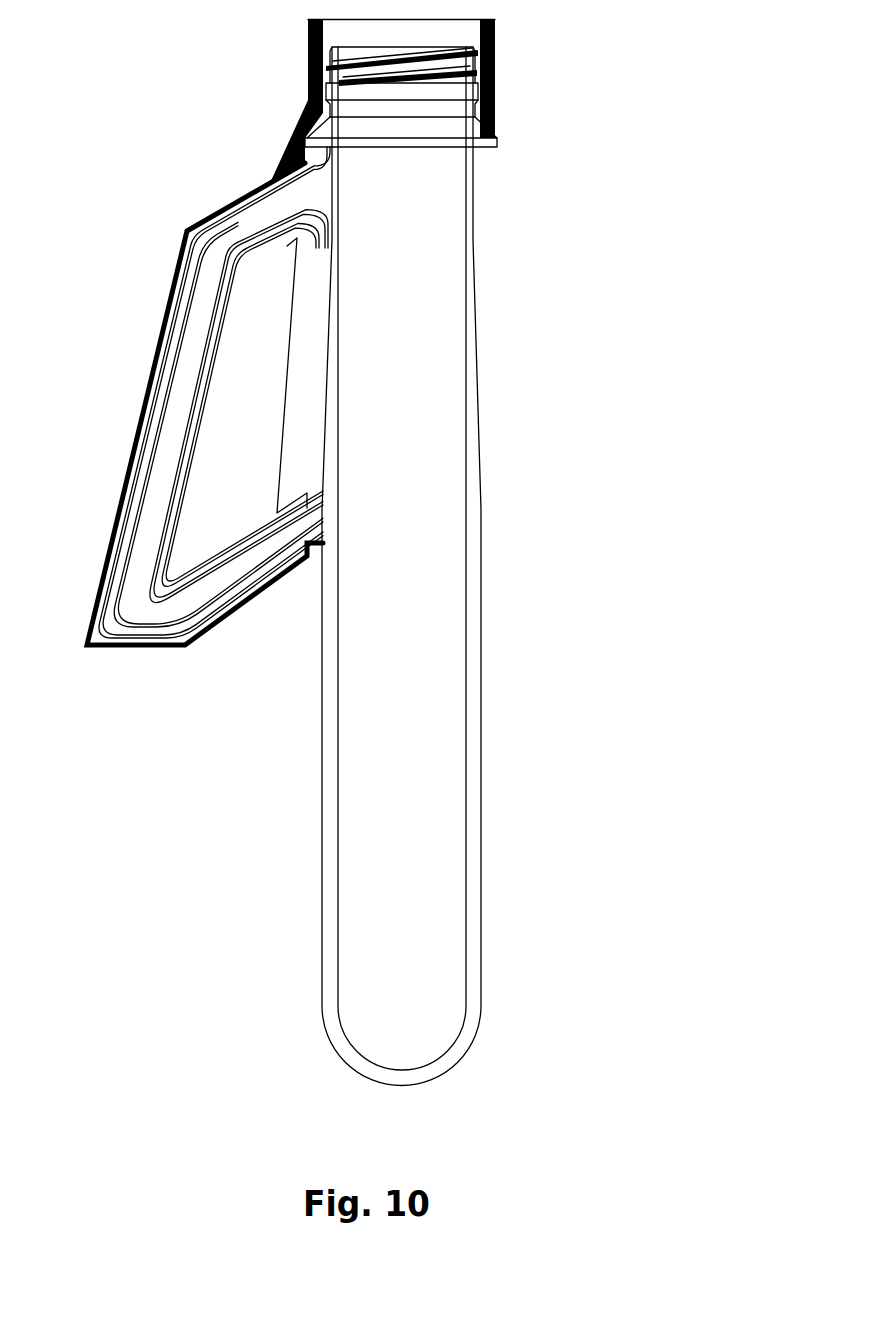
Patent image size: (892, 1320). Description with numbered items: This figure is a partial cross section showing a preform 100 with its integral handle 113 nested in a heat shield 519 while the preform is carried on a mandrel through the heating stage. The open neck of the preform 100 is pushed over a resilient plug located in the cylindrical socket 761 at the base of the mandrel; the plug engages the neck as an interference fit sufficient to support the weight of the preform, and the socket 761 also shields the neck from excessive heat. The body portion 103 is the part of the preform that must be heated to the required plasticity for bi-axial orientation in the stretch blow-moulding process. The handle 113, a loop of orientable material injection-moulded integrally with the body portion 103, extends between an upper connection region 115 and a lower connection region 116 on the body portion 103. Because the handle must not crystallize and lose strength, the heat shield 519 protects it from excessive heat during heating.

The preform 100 is at (372, 552).
The body portion 103 is at (481, 728).
The cylindrical socket 761 is at (496, 90).
The handle 113 is at (183, 359).
The upper connection region 115 is at (304, 195).
The lower connection region 116 is at (347, 522).
The heat shield 519 is at (170, 293).